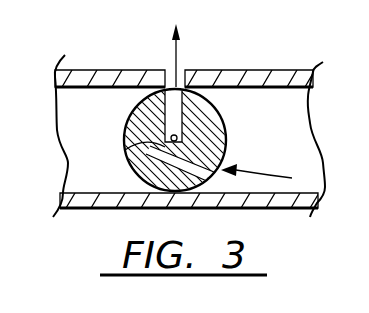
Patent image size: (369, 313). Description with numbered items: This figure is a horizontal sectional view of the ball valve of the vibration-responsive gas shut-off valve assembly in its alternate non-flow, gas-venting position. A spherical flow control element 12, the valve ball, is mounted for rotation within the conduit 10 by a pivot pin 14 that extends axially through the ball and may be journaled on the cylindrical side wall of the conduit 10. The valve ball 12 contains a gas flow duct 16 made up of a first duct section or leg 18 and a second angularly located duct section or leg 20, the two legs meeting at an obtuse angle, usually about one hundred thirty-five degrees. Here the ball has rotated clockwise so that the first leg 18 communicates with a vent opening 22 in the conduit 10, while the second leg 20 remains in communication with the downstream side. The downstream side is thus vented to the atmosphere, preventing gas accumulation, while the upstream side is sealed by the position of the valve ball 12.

The conduit 10 is at (268, 71).
The spherical flow control element 12 is at (140, 138).
The pivot pin 14 is at (126, 141).
The gas flow duct 16 is at (210, 130).
The first duct section 18 is at (204, 113).
The second duct section 20 is at (198, 158).
The vent opening 22 is at (184, 70).